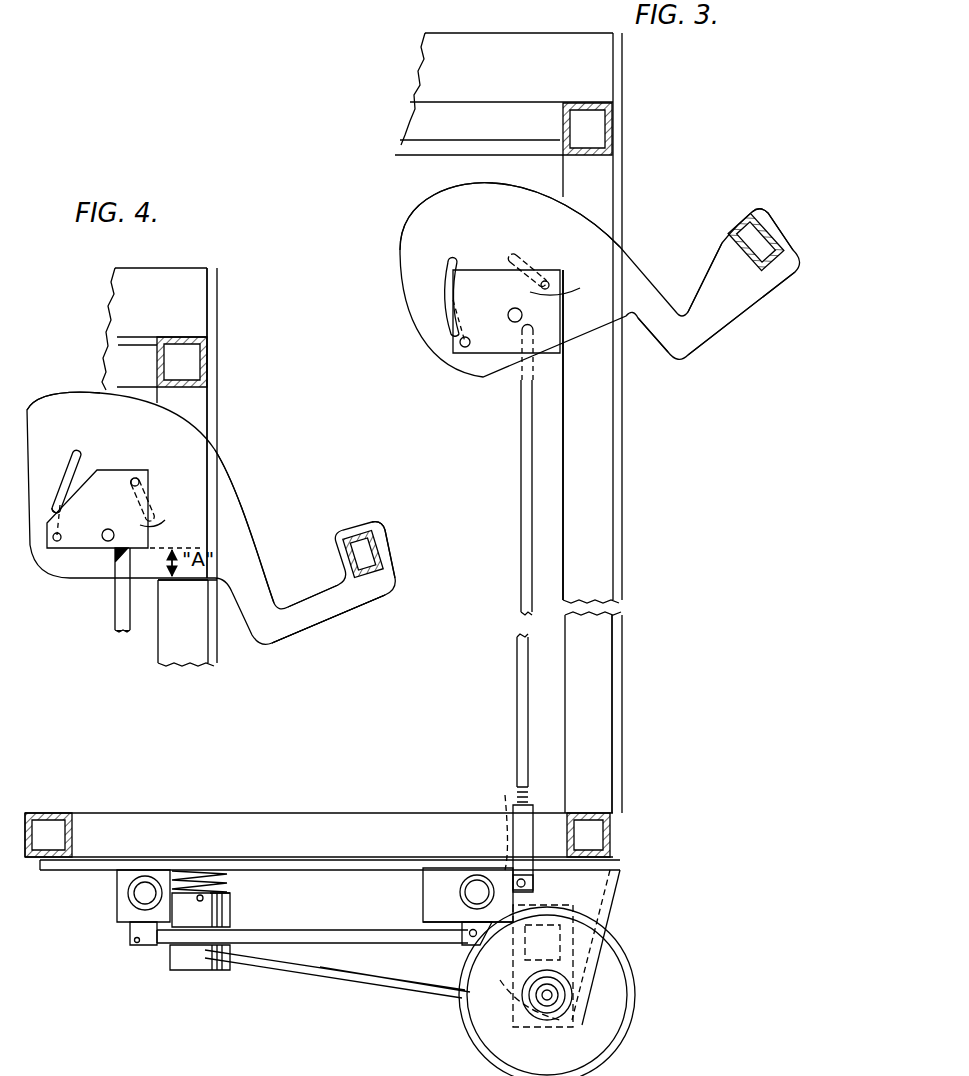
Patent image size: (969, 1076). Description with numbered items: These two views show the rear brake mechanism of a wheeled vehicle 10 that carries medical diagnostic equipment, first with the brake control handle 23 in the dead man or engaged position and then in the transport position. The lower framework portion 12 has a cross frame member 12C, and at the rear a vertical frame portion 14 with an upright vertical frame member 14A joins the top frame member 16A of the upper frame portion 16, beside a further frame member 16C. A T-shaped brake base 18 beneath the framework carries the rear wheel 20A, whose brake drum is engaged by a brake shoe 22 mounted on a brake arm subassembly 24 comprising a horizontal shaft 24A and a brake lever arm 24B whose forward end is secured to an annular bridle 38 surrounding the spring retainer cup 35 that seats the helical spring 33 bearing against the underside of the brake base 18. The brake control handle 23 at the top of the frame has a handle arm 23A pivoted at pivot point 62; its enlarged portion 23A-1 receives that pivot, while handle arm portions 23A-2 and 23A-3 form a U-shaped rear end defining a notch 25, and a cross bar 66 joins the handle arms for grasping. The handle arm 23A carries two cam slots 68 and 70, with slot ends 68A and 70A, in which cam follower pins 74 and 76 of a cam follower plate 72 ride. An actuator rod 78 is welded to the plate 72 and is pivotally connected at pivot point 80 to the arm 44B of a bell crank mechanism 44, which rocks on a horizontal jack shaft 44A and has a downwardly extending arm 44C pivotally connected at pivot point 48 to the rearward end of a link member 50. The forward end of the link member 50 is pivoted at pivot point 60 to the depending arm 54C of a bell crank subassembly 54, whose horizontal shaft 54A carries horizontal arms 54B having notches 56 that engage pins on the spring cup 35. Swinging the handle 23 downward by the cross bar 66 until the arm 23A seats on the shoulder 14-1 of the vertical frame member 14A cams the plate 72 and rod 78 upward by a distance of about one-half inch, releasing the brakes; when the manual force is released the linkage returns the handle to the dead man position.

In FIG. 3, the wheeled vehicle 10 is at (556, 471).
In FIG. 4, the wheeled vehicle 10 is at (218, 450).
In FIG. 3, the lower framework portion 12 is at (298, 812).
In FIG. 3, the cross frame member 12C is at (53, 835).
In FIG. 3, the vertical frame portion 14 is at (625, 575).
In FIG. 4, the vertical frame portion 14 is at (218, 643).
In FIG. 3, the shoulder 14-1 is at (593, 345).
In FIG. 4, the shoulder 14-1 is at (180, 583).
In FIG. 3, the vertical frame member 14A is at (618, 592).
In FIG. 3, the upper frame portion 16 is at (398, 137).
In FIG. 4, the upper frame portion 16 is at (114, 360).
In FIG. 3, the top frame member 16A is at (455, 148).
In FIG. 4, the top frame member 16A is at (138, 356).
In FIG. 3, the tubular frame member of upper section 16C is at (588, 135).
In FIG. 4, the tubular frame member of upper section 16C is at (180, 362).
In FIG. 3, the brake base 18 is at (75, 868).
In FIG. 3, the wheel 20A is at (632, 990).
In FIG. 3, the brake shoe 22 is at (583, 925).
In FIG. 3, the brake control handle 23 is at (533, 212).
In FIG. 4, the brake control handle 23 is at (278, 578).
In FIG. 3, the handle arm 23A is at (420, 225).
In FIG. 4, the handle arm 23A is at (225, 520).
In FIG. 3, the enlarged portion of handle arm 23A-1 is at (446, 216).
In FIG. 4, the enlarged portion of handle arm 23A-1 is at (37, 440).
In FIG. 3, the handle arm portion 23A-2 is at (708, 342).
In FIG. 4, the handle arm portion 23A-2 is at (325, 627).
In FIG. 3, the handle arm portion 23A-3 is at (783, 230).
In FIG. 4, the handle arm portion 23A-3 is at (388, 566).
In FIG. 3, the brake arm subassembly 24 is at (480, 1010).
In FIG. 3, the horizontal shaft 24A is at (515, 1035).
In FIG. 3, the brake lever arm 24B is at (440, 972).
In FIG. 3, the channel or notch 25 is at (727, 287).
In FIG. 4, the channel or notch 25 is at (315, 590).
In FIG. 3, the helical spring 33 is at (190, 870).
In FIG. 3, the spring retainer cup 35 is at (224, 916).
In FIG. 3, the annular bridle 38 is at (216, 975).
In FIG. 3, the bell crank mechanism 44 is at (500, 875).
In FIG. 3, the jack shaft portion 44A is at (473, 890).
In FIG. 3, the arm of bell crank mechanism 44B is at (507, 793).
In FIG. 3, the downwardly extending arm 44C is at (470, 922).
In FIG. 3, the pivot point 48 is at (470, 937).
In FIG. 3, the link member 50 is at (317, 943).
In FIG. 3, the bell crank subassembly 54 is at (120, 930).
In FIG. 3, the bell crank shaft 54A is at (140, 895).
In FIG. 3, the horizontal arm 54B is at (209, 893).
In FIG. 3, the downwardly depending arm 54C is at (153, 940).
In FIG. 3, the notch 56 is at (197, 896).
In FIG. 3, the pivot point 60 is at (134, 943).
In FIG. 3, the pivot point 62 is at (512, 310).
In FIG. 4, the pivot point 62 is at (98, 478).
In FIG. 3, the cross bar 66 is at (748, 215).
In FIG. 4, the cross bar 66 is at (366, 548).
In FIG. 3, the cam slot 68 is at (446, 287).
In FIG. 4, the cam slot 68 is at (65, 458).
In FIG. 3, the slot end 68A is at (462, 355).
In FIG. 4, the slot end 68A is at (62, 548).
In FIG. 3, the cam slot 70 is at (522, 265).
In FIG. 4, the cam slot 70 is at (150, 500).
In FIG. 3, the slot end 70A is at (556, 290).
In FIG. 4, the slot end 70A is at (158, 522).
In FIG. 3, the cam follower plate 72 is at (482, 318).
In FIG. 4, the cam follower plate 72 is at (85, 500).
In FIG. 3, the cam follower pin 74 is at (459, 343).
In FIG. 4, the cam follower pin 74 is at (55, 542).
In FIG. 3, the cam follower pin 76 is at (550, 283).
In FIG. 4, the cam follower pin 76 is at (138, 480).
In FIG. 3, the actuator rod 78 is at (520, 402).
In FIG. 4, the actuator rod 78 is at (120, 622).
In FIG. 3, the pivot point 80 is at (528, 880).